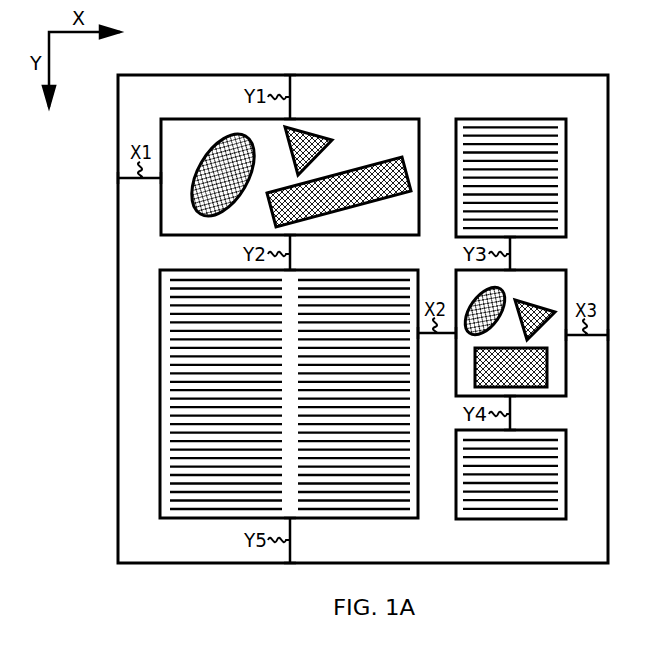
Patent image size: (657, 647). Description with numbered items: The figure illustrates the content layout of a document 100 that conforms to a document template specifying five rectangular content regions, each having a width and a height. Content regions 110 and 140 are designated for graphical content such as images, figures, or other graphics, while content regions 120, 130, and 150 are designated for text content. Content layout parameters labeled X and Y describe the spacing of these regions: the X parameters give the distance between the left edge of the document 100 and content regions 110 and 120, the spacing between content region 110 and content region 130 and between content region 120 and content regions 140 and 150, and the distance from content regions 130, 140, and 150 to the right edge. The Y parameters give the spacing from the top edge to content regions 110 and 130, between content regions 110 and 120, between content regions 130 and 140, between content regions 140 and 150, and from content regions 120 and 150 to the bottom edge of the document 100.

The document 100 is at (487, 74).
The content region 110 is at (365, 118).
The content region 120 is at (365, 268).
The content region 130 is at (537, 118).
The content region 140 is at (535, 269).
The content region 150 is at (535, 430).